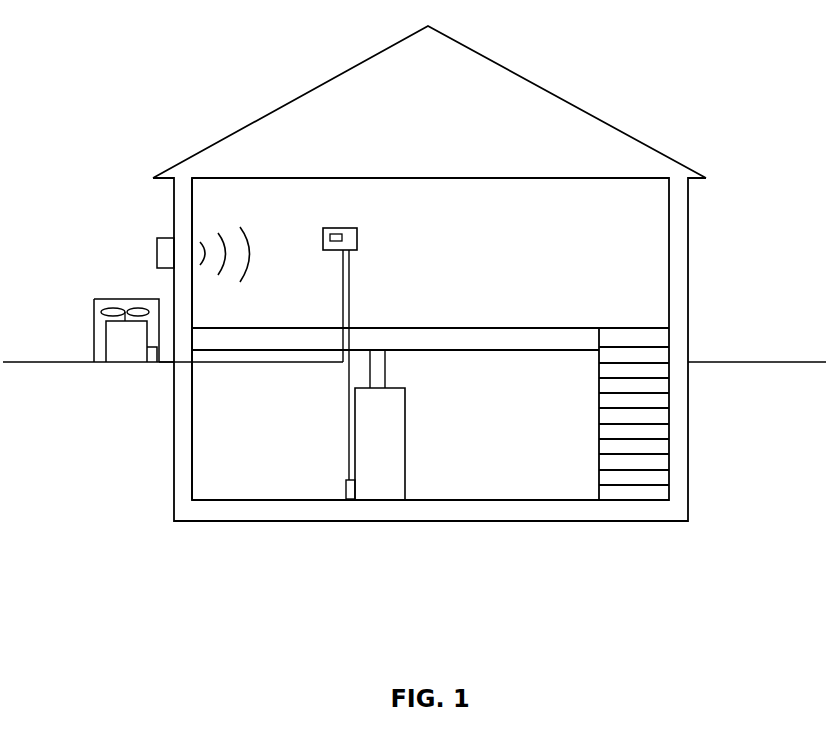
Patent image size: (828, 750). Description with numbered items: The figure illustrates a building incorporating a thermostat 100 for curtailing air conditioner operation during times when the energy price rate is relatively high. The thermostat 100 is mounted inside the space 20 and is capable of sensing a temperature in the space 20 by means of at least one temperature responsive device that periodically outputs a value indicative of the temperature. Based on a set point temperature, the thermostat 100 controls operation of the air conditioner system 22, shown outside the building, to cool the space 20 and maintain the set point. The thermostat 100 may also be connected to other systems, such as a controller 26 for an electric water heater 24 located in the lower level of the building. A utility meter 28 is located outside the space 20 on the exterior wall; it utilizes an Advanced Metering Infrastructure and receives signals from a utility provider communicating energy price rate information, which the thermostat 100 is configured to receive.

The space 20 is at (639, 243).
The air conditioner system 22 is at (106, 342).
The electric water heater 24 is at (398, 488).
The controller 26 is at (353, 487).
The utility meter 28 is at (155, 243).
The thermostat 100 is at (324, 232).